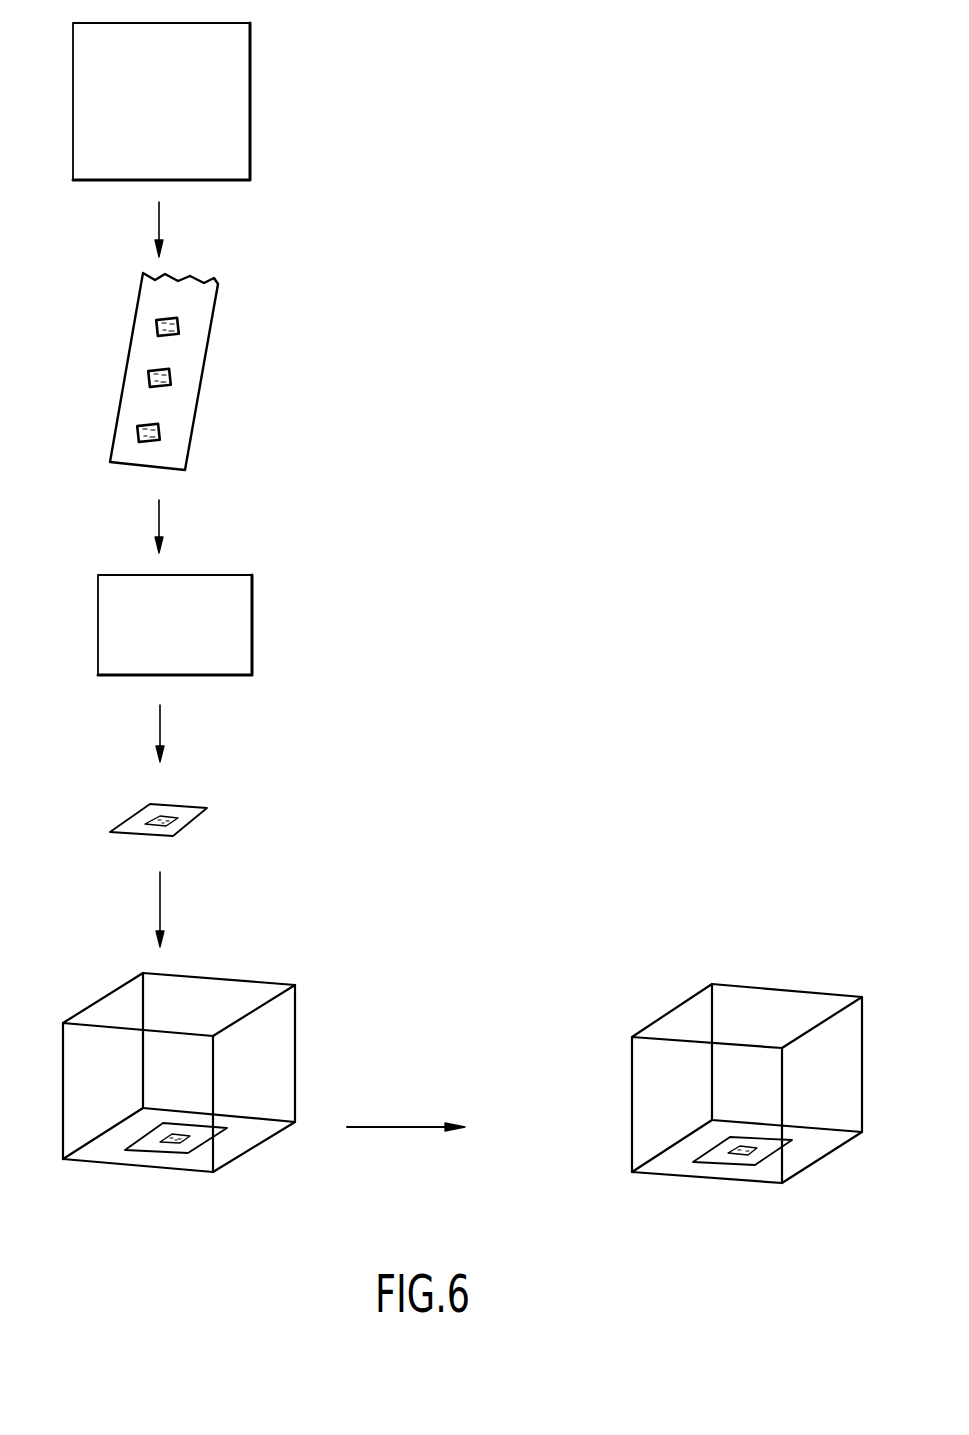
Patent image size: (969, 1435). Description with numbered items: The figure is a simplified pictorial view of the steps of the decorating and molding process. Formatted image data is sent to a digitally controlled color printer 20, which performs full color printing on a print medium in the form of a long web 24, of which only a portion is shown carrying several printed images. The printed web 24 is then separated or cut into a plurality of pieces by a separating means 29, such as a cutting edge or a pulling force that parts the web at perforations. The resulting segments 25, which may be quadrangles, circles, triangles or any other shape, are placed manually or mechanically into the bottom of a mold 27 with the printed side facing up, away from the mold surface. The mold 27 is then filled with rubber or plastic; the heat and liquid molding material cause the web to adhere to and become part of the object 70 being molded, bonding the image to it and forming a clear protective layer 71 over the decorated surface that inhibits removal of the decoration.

The digitally controlled color printer 20 is at (248, 107).
The web 24 is at (197, 403).
The separating means 29 is at (252, 637).
The segments 25 is at (203, 812).
The mold 27 is at (295, 1043).
The object 70 is at (748, 1182).
The clear protective layer 71 is at (727, 1145).